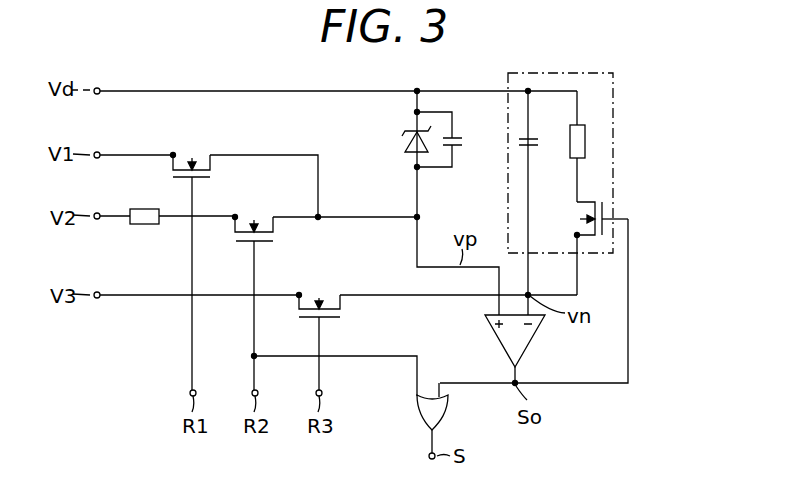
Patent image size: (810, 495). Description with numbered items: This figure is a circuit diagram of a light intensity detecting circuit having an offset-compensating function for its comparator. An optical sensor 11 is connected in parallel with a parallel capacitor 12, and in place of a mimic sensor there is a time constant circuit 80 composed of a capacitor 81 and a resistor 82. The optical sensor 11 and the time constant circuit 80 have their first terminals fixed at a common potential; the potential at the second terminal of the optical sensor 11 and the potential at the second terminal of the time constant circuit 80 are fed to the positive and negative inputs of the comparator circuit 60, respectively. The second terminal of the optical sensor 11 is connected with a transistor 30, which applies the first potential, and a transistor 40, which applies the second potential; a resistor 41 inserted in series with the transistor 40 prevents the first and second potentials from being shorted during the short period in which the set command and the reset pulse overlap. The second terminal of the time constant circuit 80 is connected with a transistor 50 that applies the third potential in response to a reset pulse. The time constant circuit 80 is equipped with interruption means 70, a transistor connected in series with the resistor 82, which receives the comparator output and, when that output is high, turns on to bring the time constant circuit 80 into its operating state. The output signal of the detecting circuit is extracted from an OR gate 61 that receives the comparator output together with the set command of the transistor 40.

The optical sensor 11 is at (406, 143).
The parallel capacitor 12 is at (465, 142).
The transistor 30 is at (201, 160).
The transistor 40 is at (262, 216).
The resistor 41 is at (157, 226).
The transistor 50 is at (330, 293).
The comparator circuit 60 is at (533, 345).
The OR gate 61 is at (417, 415).
The interruption means 70 is at (604, 206).
The time constant circuit 80 is at (613, 108).
The capacitor 81 is at (518, 148).
The resistor 82 is at (586, 146).